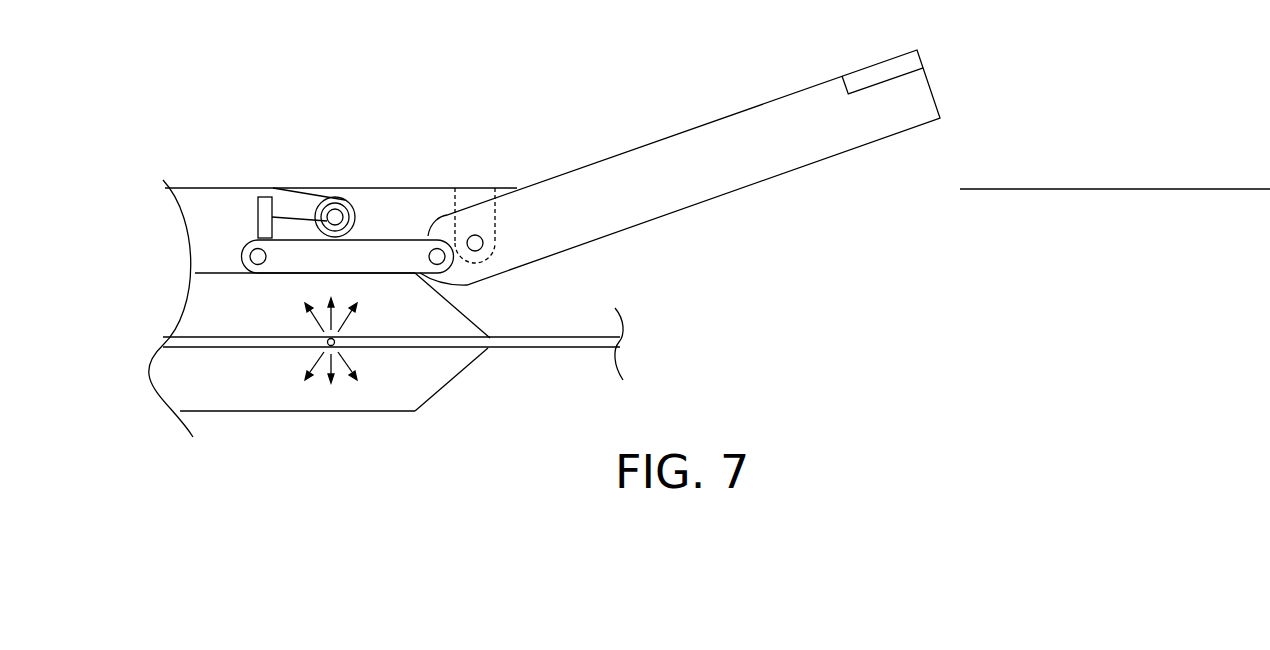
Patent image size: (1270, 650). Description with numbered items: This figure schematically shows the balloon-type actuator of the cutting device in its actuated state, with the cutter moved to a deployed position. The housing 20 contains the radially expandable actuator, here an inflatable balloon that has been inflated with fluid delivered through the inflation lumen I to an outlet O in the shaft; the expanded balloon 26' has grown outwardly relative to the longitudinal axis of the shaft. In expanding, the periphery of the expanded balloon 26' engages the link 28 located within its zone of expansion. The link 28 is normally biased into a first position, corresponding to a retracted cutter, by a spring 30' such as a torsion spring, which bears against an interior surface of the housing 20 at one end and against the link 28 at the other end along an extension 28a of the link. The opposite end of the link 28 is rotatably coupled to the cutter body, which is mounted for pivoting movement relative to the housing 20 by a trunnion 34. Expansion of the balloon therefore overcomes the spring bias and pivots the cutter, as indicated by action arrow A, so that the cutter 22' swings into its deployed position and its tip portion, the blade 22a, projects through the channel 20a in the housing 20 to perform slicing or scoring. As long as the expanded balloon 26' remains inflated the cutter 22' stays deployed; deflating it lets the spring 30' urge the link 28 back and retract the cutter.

The housing 20 is at (418, 188).
The channel 20a is at (953, 154).
The cutter in deployed position 22' is at (680, 145).
The blade 22a is at (932, 81).
The expanded balloon 26' is at (472, 347).
The link 28 is at (365, 250).
The extension 28a is at (260, 207).
The spring 30' is at (347, 172).
The trunnion 34 is at (485, 195).
The outlet O is at (336, 345).
The action arrow A is at (866, 245).
The inflation lumen I is at (632, 346).